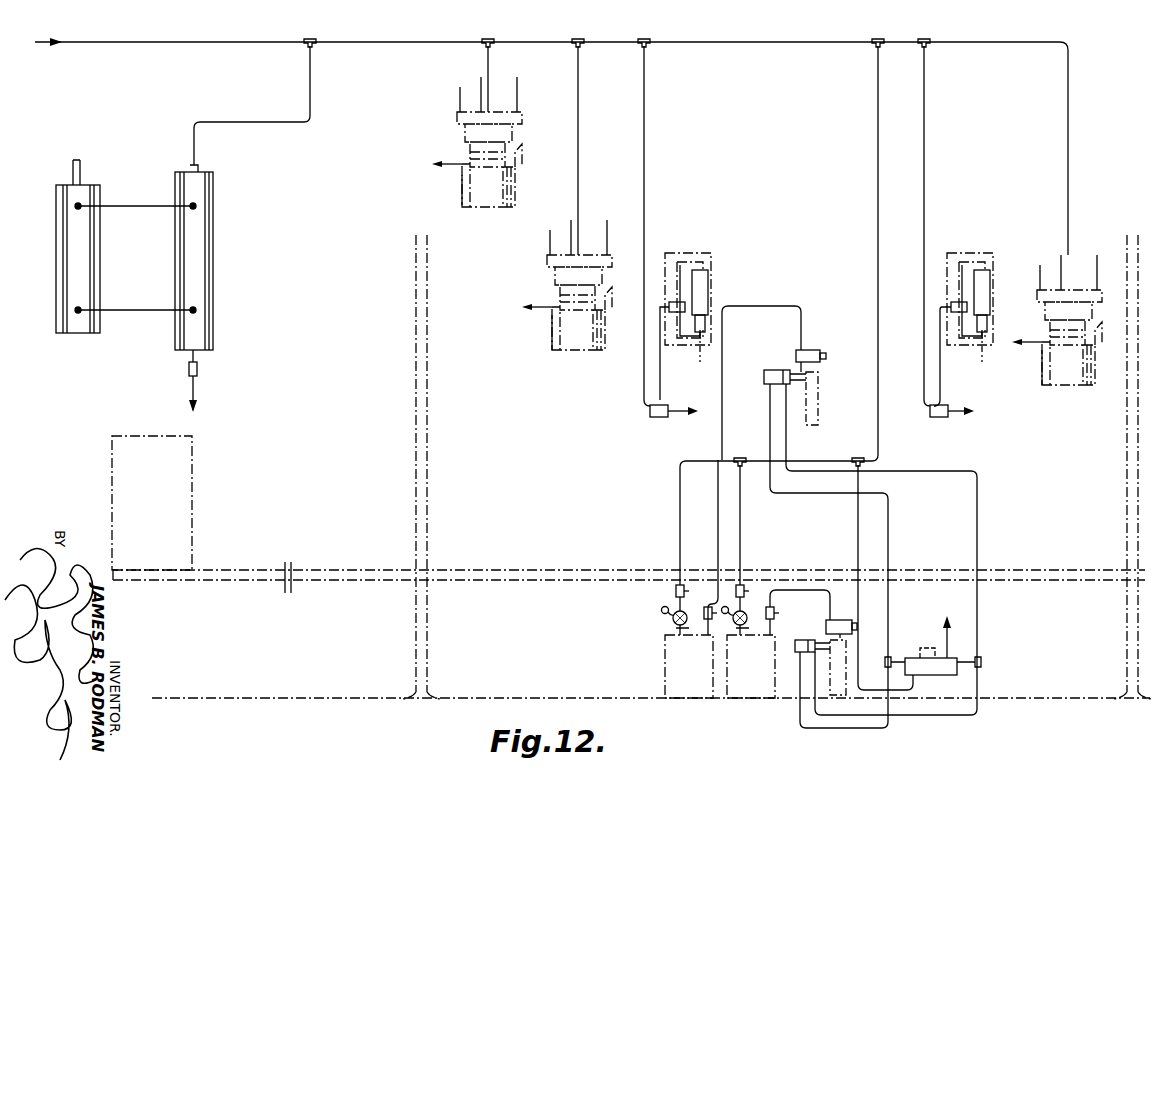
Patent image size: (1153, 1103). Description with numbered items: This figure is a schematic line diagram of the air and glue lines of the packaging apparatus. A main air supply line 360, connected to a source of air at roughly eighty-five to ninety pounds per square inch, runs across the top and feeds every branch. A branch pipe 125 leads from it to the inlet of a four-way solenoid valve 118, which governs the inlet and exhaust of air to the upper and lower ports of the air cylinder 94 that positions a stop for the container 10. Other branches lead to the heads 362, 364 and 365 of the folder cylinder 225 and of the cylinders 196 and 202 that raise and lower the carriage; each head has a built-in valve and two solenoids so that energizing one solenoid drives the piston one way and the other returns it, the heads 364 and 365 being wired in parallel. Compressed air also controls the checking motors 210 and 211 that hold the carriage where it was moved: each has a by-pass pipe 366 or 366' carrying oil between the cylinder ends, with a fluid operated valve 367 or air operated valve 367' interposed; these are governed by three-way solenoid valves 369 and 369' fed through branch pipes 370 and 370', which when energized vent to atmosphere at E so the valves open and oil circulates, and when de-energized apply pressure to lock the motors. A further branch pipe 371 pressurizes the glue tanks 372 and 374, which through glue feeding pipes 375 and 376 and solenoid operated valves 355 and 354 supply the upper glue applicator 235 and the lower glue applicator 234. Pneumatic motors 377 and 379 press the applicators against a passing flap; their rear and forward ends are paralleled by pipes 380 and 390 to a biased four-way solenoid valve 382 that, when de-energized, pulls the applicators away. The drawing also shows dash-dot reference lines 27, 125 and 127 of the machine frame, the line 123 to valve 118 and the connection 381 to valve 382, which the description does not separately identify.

The container 10 is at (195, 448).
The floor line 27 is at (205, 580).
The air cylinder 94 is at (58, 266).
The four-way solenoid valve 118 is at (213, 270).
The supply conduit 123 is at (312, 85).
The branch pipe 125 is at (416, 366).
The column 127 is at (1127, 420).
The cylinder 196 is at (550, 334).
The cylinder 202 is at (1042, 375).
The carriage adjusting checking motor 210 is at (710, 283).
The carriage adjusting checking motor 211 is at (985, 284).
The folder cylinder 225 is at (462, 194).
The lower glue applicator 234 is at (834, 700).
The upper glue applicator 235 is at (825, 402).
The solenoid operated valve 354 is at (842, 618).
The solenoid operated valve 355 is at (822, 346).
The main air supply line 360 is at (218, 42).
The head 362 is at (458, 124).
The head 364 is at (548, 278).
The head 365 is at (1040, 310).
The pipe 366 is at (689, 283).
The by-pass pipe 366' is at (970, 283).
The fluid operated valve 367 is at (644, 351).
The air operated valve 367' is at (925, 340).
The three-way solenoid operated valve 369 is at (651, 429).
The three-way solenoid operated valve 369' is at (953, 429).
The branch pipe 370 is at (672, 226).
The branch pipe 370' is at (955, 226).
The branch pipe 371 is at (876, 129).
The glue tank 372 is at (672, 656).
The glue tank 374 is at (745, 700).
The glue feeding pipe 375 is at (782, 304).
The glue feeding pipe 376 is at (792, 588).
The pneumatic motor 377 is at (768, 384).
The pneumatic motor 379 is at (806, 641).
The pipe 380 is at (888, 529).
The line 381 is at (864, 605).
The four-way solenoid valve 382 is at (932, 678).
The pipe 390 is at (977, 525).